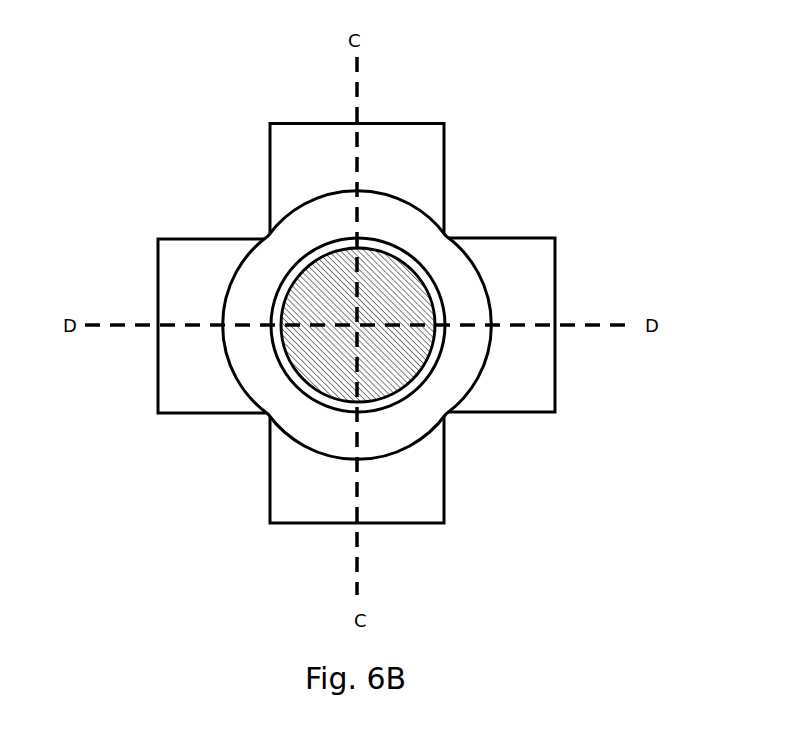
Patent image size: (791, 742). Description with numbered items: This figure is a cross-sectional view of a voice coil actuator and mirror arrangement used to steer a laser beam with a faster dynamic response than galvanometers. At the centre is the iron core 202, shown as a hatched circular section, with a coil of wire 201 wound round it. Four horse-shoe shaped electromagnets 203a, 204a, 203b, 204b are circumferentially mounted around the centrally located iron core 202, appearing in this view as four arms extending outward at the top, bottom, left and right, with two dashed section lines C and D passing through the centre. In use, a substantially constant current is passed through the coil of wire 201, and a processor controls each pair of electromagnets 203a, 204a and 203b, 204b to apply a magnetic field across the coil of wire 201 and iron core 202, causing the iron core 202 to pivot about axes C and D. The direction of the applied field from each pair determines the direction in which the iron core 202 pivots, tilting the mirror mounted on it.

The coil of wire 201 is at (422, 258).
The iron core 202 is at (397, 360).
The horse-shoe shaped electromagnet 203a is at (303, 158).
The horse-shoe shaped electromagnet 203b is at (185, 378).
The horse-shoe shaped electromagnet 204a is at (290, 490).
The horse-shoe shaped electromagnet 204b is at (540, 265).